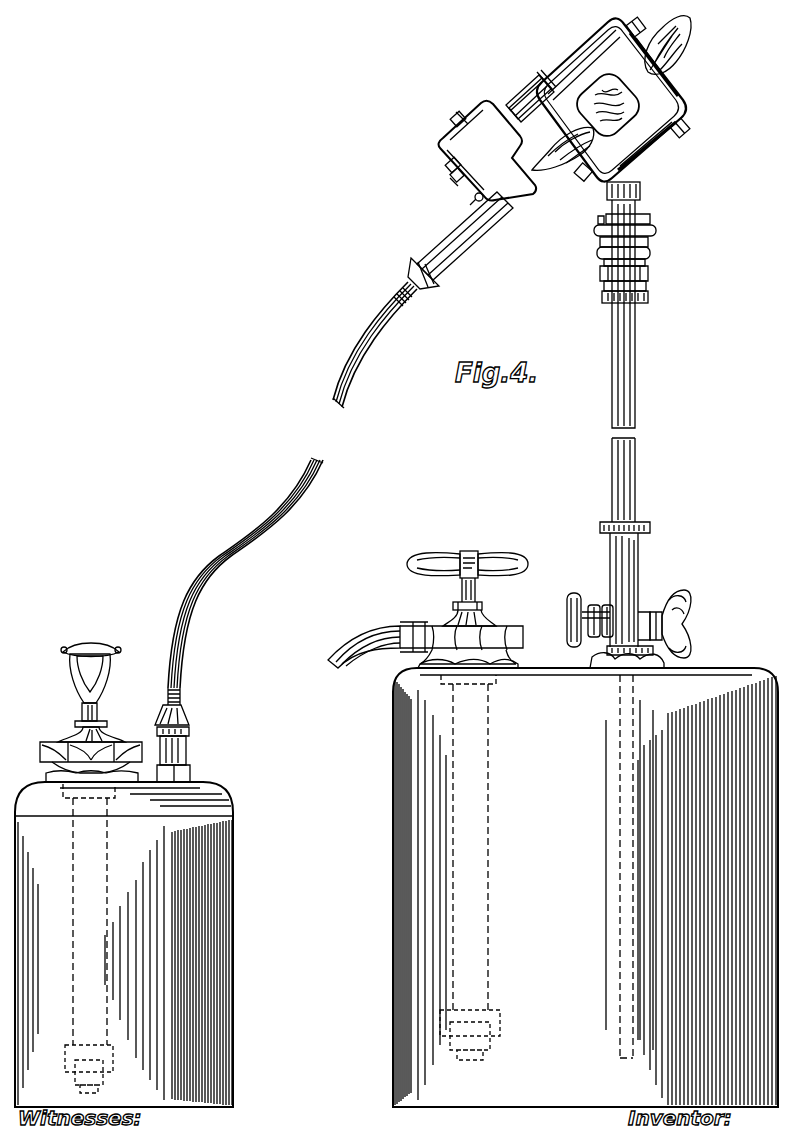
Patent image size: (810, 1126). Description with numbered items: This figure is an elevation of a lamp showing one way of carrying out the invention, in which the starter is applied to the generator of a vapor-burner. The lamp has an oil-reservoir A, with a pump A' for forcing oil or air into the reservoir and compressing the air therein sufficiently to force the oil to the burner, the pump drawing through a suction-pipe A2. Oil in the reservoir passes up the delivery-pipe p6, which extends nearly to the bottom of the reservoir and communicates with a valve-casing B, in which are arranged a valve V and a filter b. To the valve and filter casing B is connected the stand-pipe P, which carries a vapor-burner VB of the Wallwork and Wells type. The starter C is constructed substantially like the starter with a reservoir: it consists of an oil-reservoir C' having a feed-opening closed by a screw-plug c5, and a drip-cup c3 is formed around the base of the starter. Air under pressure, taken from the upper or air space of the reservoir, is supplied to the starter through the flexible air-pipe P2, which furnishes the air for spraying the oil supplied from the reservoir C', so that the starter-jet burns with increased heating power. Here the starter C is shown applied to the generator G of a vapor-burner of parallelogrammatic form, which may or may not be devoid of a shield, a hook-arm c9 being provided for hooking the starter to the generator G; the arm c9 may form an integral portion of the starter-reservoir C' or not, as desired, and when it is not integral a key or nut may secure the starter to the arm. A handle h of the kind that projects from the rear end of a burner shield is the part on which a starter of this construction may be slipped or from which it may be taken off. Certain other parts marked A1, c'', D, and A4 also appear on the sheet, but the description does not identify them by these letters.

The oil-reservoir A is at (593, 887).
The pump A' is at (481, 867).
The delivery-pipe p6 is at (615, 790).
The valve handle A1 is at (467, 575).
The suction-pipe A2 is at (425, 633).
The valve-casing B is at (610, 567).
The valve V is at (567, 613).
The filter b is at (683, 620).
The stand-pipe P is at (600, 487).
The generator G is at (611, 99).
The vapor-burner VB is at (686, 104).
The hook-arm c9 is at (530, 98).
The starter C is at (460, 211).
The oil-reservoir of starter C' is at (488, 151).
The screw-plug c5 is at (452, 122).
The fitting c'' is at (440, 170).
The handle h is at (452, 182).
The drip-cup c3 is at (469, 204).
The air-pipe P2 is at (375, 345).
The hose coupling D is at (190, 752).
The auxiliary tank pipe A4 is at (73, 940).